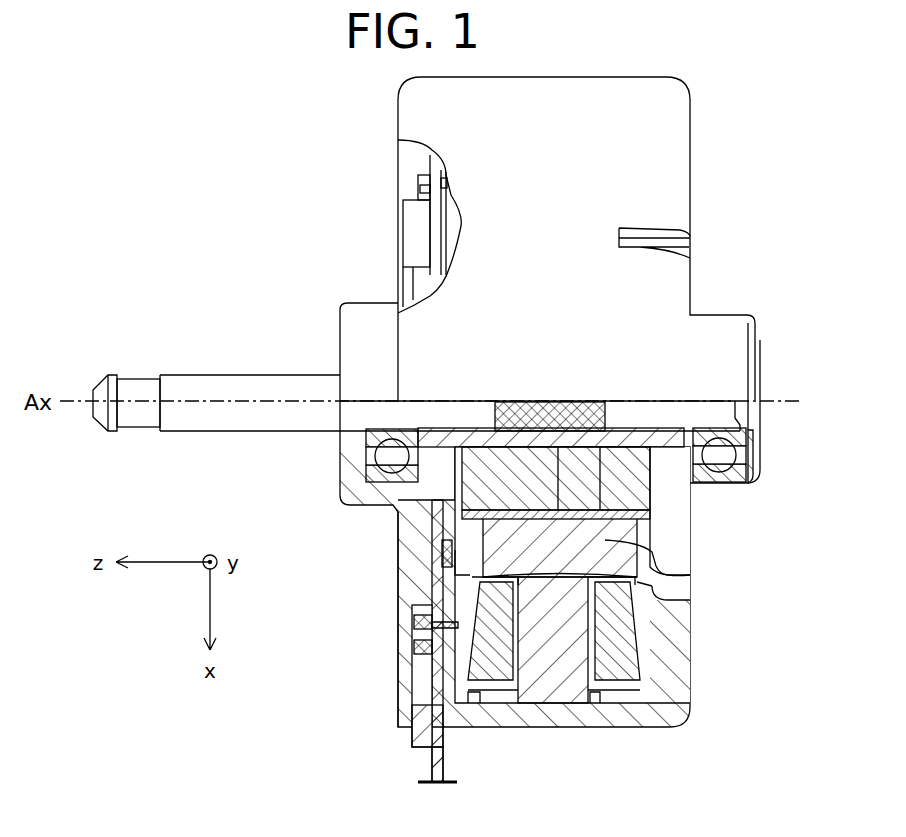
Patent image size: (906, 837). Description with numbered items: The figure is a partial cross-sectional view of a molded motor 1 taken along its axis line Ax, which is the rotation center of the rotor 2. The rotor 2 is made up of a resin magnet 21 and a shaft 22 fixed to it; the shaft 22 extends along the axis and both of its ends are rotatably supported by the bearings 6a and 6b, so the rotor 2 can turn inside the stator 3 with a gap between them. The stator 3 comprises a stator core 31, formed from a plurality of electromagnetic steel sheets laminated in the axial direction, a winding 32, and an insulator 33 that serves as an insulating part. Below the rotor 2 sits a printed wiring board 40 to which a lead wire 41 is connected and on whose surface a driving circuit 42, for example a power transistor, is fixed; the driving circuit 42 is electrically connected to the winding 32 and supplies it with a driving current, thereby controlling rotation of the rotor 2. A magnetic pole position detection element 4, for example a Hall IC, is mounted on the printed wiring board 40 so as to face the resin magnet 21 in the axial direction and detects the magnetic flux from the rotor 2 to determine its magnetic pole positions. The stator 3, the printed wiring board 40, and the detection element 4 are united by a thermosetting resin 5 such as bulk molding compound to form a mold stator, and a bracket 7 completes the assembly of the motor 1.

The motor 1 is at (178, 97).
The rotor 2 is at (652, 528).
The resin magnet 21 is at (652, 512).
The shaft 22 is at (245, 386).
The stator 3 is at (500, 786).
The stator core 31 is at (565, 703).
The winding 32 is at (510, 703).
The insulator 33 is at (610, 703).
The magnetic pole position detection element 4 is at (432, 548).
The printed wiring board 40 is at (432, 600).
The lead wire 41 is at (430, 768).
The driving circuit 42 is at (412, 652).
The resin 5 is at (469, 727).
The bearing 6a is at (366, 458).
The bearing 6b is at (748, 468).
The bracket 7 is at (690, 566).